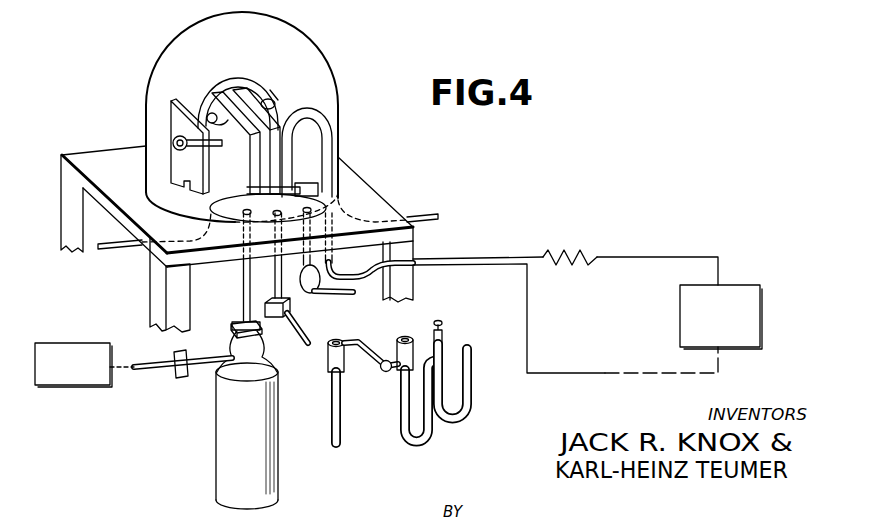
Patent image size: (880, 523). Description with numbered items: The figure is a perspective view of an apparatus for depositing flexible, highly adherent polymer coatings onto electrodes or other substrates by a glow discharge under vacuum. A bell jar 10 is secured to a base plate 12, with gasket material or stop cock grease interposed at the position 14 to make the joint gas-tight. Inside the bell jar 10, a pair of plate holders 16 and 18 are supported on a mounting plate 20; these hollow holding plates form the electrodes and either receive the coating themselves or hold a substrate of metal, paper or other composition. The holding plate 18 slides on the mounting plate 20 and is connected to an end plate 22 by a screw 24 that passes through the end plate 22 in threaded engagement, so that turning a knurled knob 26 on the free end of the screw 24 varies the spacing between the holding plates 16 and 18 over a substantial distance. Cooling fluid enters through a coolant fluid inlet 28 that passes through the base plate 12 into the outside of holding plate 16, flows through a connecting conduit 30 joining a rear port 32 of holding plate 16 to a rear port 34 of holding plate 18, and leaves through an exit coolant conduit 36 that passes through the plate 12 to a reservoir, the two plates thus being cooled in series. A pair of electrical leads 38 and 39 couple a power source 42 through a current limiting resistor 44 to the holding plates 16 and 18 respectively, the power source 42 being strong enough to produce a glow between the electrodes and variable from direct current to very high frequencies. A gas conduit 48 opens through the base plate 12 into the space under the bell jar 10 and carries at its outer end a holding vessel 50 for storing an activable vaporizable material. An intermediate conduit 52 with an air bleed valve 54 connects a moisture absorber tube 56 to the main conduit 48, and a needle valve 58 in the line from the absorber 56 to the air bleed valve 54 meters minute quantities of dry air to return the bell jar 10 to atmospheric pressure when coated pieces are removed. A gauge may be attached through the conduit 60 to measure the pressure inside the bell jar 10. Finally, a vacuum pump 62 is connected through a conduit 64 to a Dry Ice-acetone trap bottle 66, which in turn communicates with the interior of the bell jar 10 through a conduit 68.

The bell jar 10 is at (302, 40).
The base plate 12 is at (363, 182).
The position of gasket material or stop cock grease 14 is at (138, 217).
The plate holder 16 is at (279, 123).
The plate holder 18 is at (213, 78).
The mounting plate 20 is at (318, 170).
The end plate 22 is at (168, 101).
The screw 24 is at (200, 157).
The knurled knob 26 is at (174, 140).
The coolant fluid inlet 28 is at (416, 214).
The connecting conduit 30 is at (270, 88).
The rear port 32 is at (276, 98).
The rear port 34 is at (197, 110).
The exit coolant conduit 36 is at (115, 252).
The electrical lead 38 is at (241, 218).
The electrical lead 39 is at (296, 186).
The power source 42 is at (750, 285).
The current limiting resistor 44 is at (588, 256).
The gas conduit 48 is at (307, 318).
The holding vessel 50 is at (330, 414).
The intermediate conduit 52 is at (370, 360).
The air bleed valve 54 is at (398, 337).
The moisture absorber tube 56 is at (470, 413).
The needle valve 58 is at (443, 331).
The conduit 60 is at (330, 296).
The vacuum pump 62 is at (74, 330).
The conduit 64 is at (134, 370).
The Dry Ice-acetone trap bottle 66 is at (220, 434).
The conduit 68 is at (243, 280).